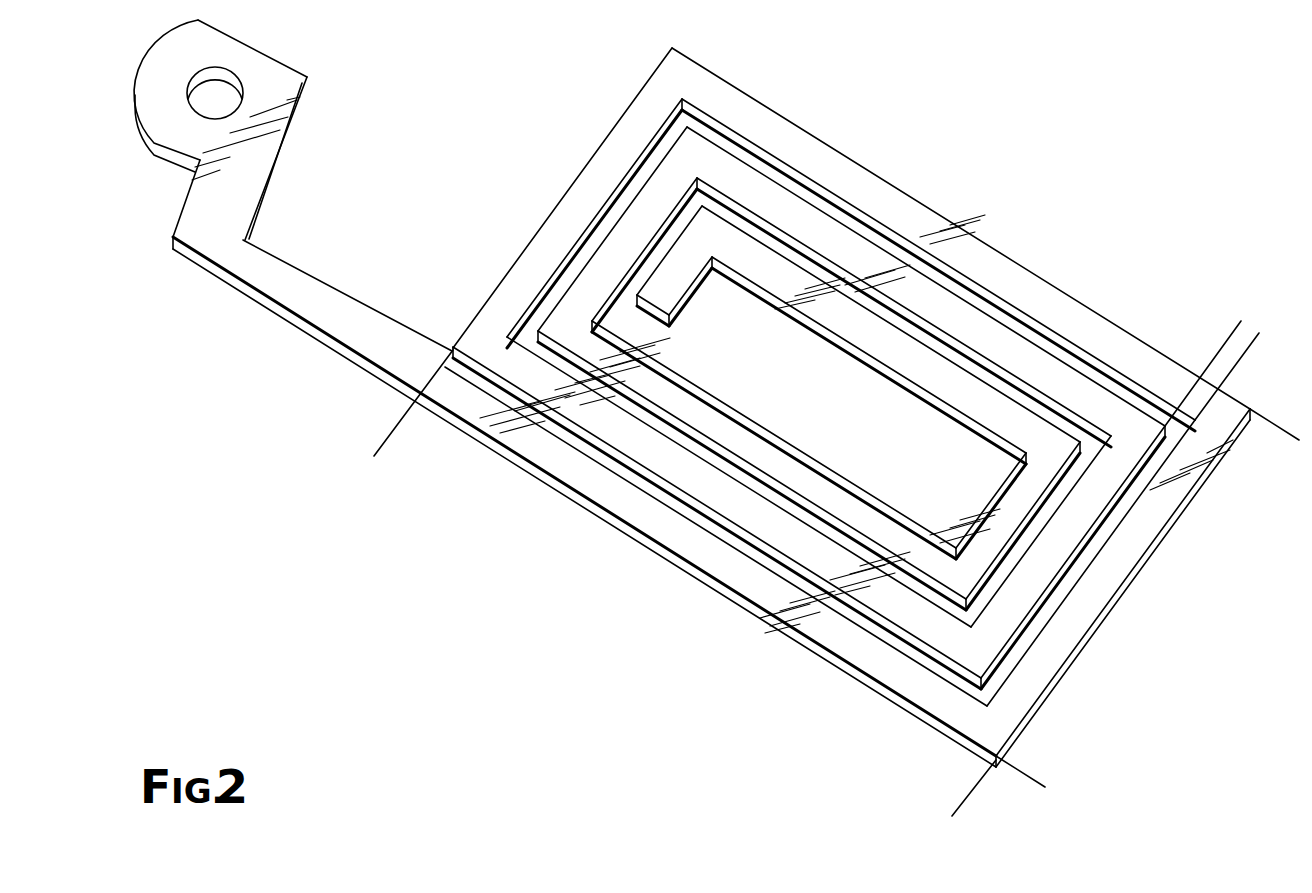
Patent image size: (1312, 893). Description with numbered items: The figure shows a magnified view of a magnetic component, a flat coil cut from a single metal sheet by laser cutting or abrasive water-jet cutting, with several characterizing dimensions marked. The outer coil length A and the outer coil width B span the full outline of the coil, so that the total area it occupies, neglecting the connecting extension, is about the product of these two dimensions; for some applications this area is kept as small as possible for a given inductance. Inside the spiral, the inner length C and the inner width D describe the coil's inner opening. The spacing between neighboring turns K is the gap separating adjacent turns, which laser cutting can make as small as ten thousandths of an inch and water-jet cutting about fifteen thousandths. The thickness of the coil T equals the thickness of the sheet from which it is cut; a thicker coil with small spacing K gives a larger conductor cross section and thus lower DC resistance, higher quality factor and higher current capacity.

The outer coil length A is at (961, 805).
The outer coil width B is at (1284, 431).
The inner length C is at (1008, 477).
The inner width D is at (978, 423).
The thickness of the coil T is at (327, 397).
The spacing between neighboring turns K is at (1190, 307).